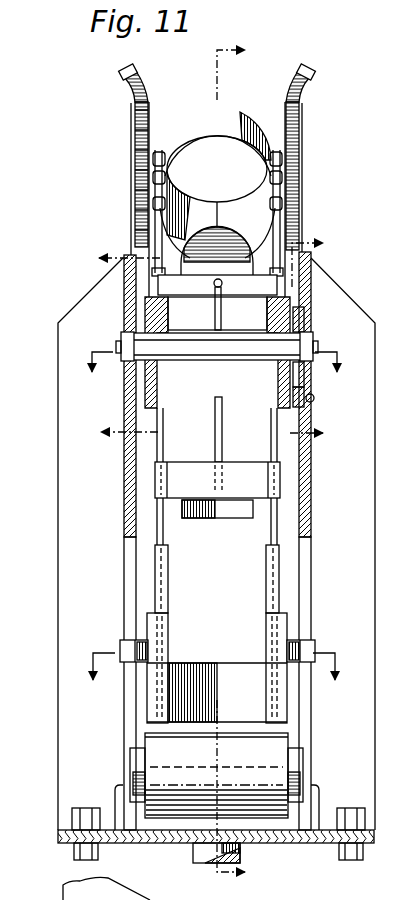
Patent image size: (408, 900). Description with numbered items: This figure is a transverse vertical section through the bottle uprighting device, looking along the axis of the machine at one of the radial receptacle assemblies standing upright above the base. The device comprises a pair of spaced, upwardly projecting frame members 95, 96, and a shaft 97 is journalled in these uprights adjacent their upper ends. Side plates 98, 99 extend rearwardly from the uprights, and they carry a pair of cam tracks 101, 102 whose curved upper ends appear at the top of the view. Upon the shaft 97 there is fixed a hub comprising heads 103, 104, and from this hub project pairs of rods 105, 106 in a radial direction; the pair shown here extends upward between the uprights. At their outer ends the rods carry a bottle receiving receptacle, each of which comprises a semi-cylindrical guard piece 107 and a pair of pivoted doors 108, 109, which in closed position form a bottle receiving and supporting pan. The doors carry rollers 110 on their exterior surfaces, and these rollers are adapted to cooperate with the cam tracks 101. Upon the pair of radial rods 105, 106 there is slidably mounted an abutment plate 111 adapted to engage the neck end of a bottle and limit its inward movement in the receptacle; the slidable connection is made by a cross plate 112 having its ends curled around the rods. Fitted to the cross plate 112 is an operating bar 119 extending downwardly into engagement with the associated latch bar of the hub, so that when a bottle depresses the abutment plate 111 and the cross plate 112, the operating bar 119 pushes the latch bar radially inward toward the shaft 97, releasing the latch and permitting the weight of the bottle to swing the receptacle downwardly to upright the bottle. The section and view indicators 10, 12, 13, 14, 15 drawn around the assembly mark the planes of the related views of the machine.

The section line 10 is at (246, 461).
The section line 12 is at (110, 346).
The section line 13 is at (321, 339).
The section line 14 / transverse shaft 14 is at (215, 364).
The section line 15 is at (215, 678).
The frame member 95 is at (125, 502).
The frame member 96 is at (305, 500).
The shaft 97 is at (305, 317).
The side plate 98 is at (134, 126).
The side plate 99 is at (303, 150).
The cam track 101 is at (310, 76).
The cam track 102 is at (143, 136).
The head 103 is at (146, 316).
The head 104 is at (288, 298).
The rod 105 is at (158, 230).
The rod 106 is at (280, 233).
The guard piece 107 is at (235, 675).
The pivoted door 108 is at (185, 195).
The pivoted door 109 is at (241, 204).
The roller 110 is at (128, 647).
The abutment plate 111 is at (248, 262).
The cross plate 112 is at (192, 476).
The operating bar 119 is at (216, 318).